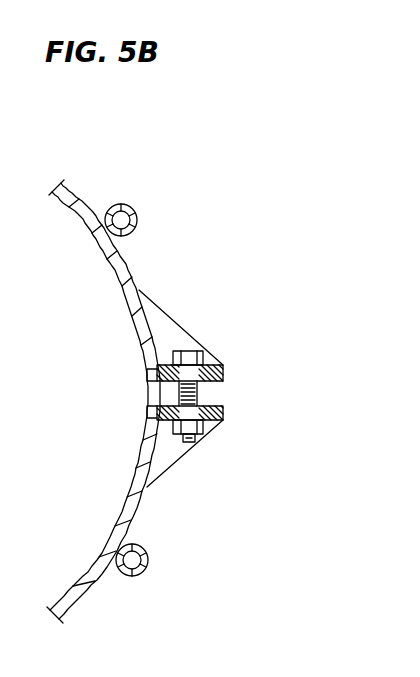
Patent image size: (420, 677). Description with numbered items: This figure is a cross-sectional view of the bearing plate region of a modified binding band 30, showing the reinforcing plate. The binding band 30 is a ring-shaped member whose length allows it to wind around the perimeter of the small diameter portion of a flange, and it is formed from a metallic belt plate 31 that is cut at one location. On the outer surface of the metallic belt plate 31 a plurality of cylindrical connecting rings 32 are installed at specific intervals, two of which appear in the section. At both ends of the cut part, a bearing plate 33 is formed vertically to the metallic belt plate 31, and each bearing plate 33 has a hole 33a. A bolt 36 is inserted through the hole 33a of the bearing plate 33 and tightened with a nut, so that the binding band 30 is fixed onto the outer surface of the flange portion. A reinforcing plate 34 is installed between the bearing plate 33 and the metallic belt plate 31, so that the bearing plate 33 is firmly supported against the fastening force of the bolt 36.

The binding band 30 is at (206, 279).
The metallic belt plate 31 is at (124, 296).
The connecting ring 32 is at (132, 206).
The bearing plate 33 is at (189, 398).
The hole 33a is at (176, 404).
The reinforcing plate 34 is at (185, 331).
The bolt 36 is at (171, 350).